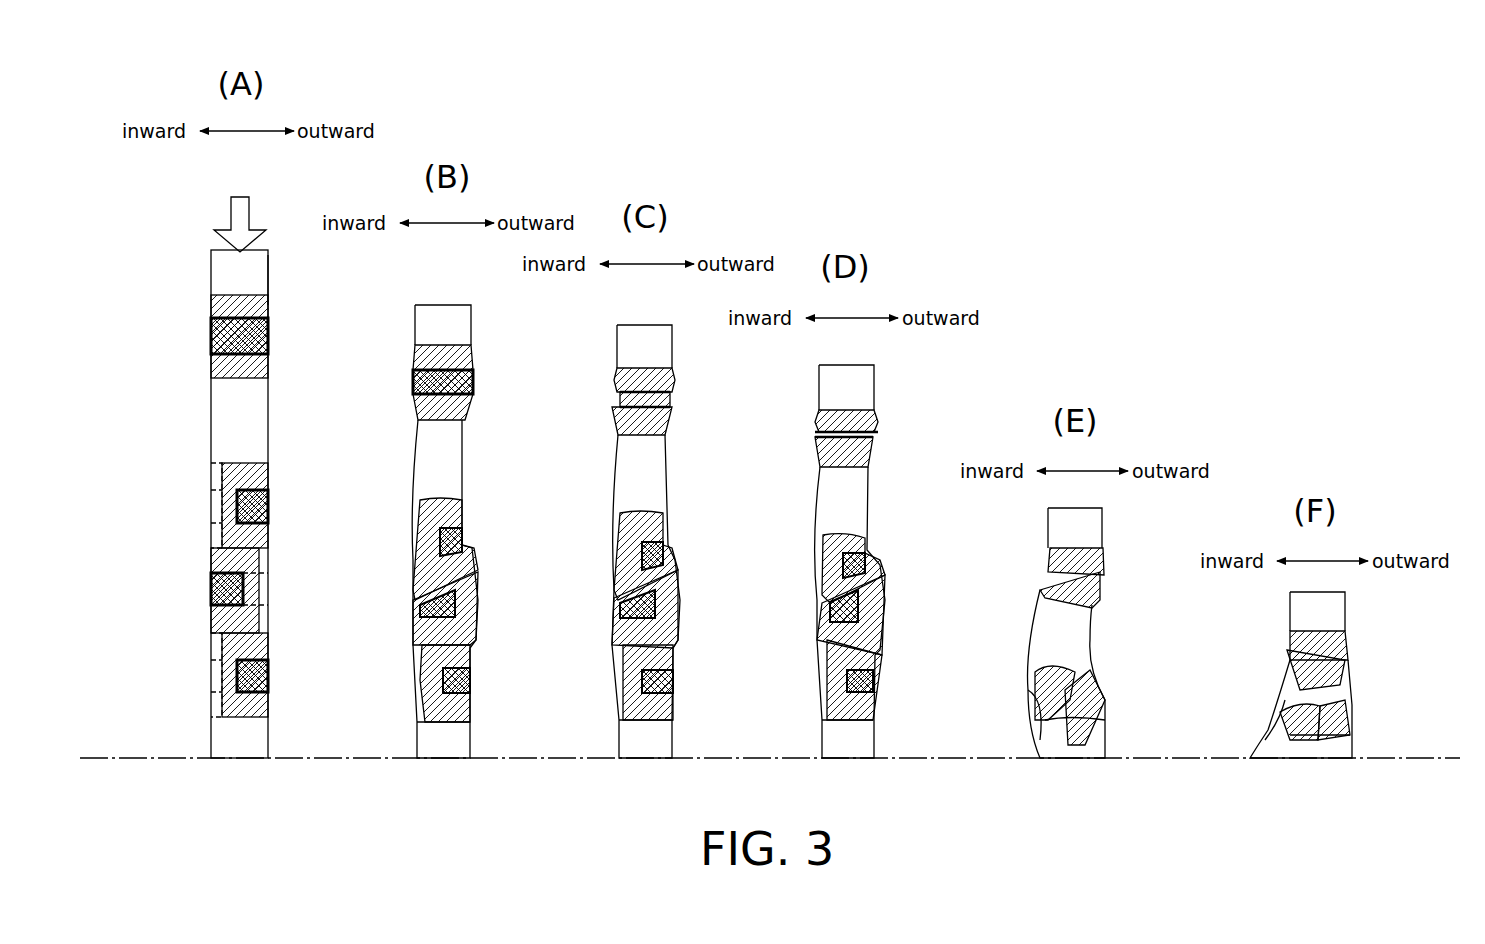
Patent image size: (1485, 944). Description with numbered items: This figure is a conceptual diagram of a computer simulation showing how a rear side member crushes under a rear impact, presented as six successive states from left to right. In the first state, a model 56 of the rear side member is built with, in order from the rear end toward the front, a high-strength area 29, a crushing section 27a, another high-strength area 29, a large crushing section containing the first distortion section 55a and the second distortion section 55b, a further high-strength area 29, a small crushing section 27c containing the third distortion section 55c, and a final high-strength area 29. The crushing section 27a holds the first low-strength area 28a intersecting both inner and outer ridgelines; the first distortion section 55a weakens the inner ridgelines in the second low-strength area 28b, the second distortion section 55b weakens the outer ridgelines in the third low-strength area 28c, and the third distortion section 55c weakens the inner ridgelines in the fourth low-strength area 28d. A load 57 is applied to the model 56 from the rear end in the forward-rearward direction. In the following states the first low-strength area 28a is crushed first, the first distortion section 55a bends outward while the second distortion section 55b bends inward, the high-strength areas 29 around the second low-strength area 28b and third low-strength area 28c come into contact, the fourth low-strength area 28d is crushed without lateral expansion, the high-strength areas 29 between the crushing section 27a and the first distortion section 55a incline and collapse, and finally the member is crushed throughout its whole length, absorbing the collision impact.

The high-strength area 29 is at (222, 272).
The first low-strength area 28a is at (258, 342).
The second low-strength area 28b is at (890, 548).
The third low-strength area 28c is at (228, 595).
The fourth low-strength area 28d is at (262, 680).
The crushing section 27a is at (210, 340).
The small crushing section 27c is at (262, 510).
The first distortion section 55a is at (215, 508).
The second distortion section 55b is at (263, 590).
The third distortion section 55c is at (222, 675).
The model 56 is at (280, 268).
The load 57 is at (245, 218).